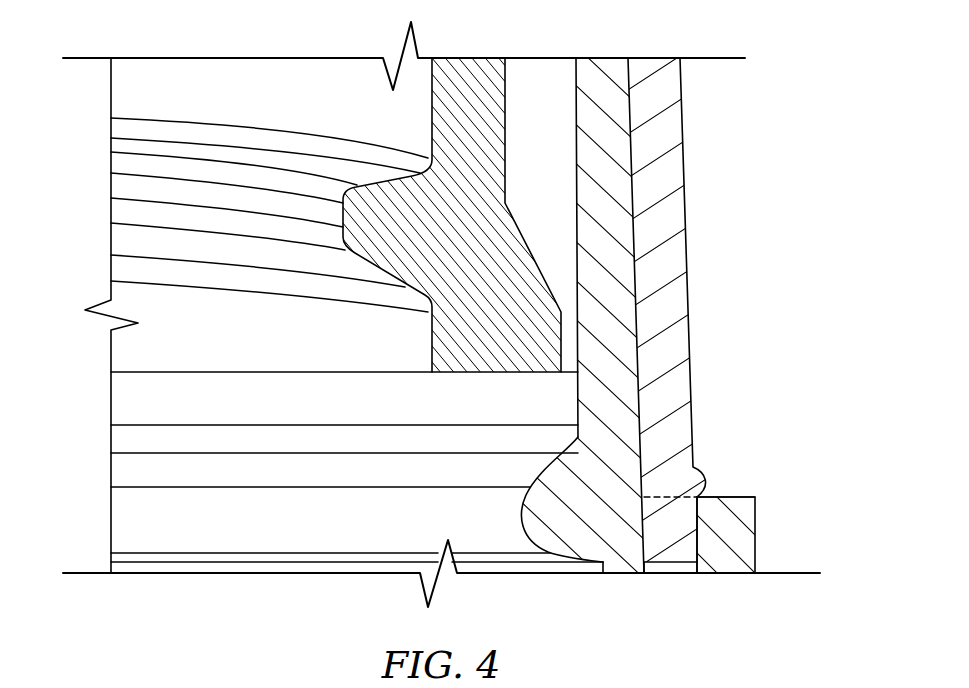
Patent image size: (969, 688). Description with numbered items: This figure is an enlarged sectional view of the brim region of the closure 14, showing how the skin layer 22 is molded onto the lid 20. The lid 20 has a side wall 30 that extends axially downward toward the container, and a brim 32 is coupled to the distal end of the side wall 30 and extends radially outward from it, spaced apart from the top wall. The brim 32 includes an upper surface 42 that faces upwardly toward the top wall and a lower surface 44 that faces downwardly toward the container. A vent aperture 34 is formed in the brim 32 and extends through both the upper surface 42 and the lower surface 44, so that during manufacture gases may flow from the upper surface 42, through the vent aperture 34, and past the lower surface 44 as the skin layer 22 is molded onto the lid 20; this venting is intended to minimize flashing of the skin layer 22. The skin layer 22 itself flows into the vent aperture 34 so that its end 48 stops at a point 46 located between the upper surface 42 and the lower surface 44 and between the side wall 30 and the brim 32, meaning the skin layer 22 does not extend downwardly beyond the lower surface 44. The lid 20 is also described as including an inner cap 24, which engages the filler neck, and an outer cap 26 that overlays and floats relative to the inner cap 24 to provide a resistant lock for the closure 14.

The closure 14 is at (742, 113).
The lid 20 is at (572, 105).
The skin layer 22 is at (701, 290).
The inner cap 24 is at (448, 381).
The outer cap 26 is at (578, 393).
The side wall 30 is at (568, 344).
The brim 32 is at (766, 550).
The vent aperture 34 is at (668, 523).
The upper surface 42 is at (743, 497).
The lower surface 44 is at (730, 573).
The point 46 is at (642, 562).
The end 48 is at (667, 566).